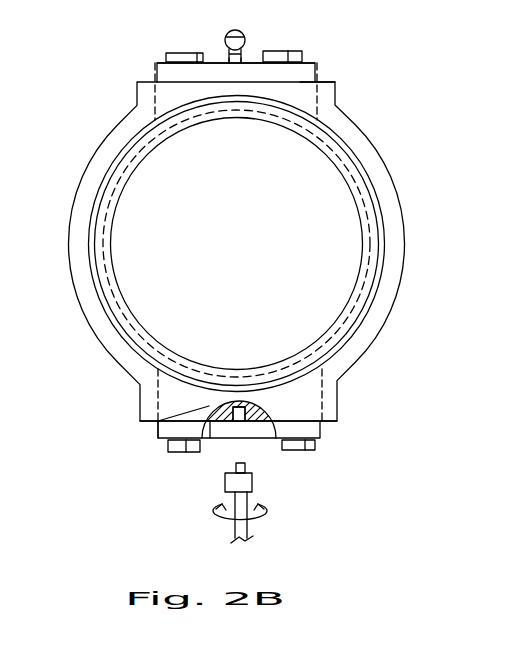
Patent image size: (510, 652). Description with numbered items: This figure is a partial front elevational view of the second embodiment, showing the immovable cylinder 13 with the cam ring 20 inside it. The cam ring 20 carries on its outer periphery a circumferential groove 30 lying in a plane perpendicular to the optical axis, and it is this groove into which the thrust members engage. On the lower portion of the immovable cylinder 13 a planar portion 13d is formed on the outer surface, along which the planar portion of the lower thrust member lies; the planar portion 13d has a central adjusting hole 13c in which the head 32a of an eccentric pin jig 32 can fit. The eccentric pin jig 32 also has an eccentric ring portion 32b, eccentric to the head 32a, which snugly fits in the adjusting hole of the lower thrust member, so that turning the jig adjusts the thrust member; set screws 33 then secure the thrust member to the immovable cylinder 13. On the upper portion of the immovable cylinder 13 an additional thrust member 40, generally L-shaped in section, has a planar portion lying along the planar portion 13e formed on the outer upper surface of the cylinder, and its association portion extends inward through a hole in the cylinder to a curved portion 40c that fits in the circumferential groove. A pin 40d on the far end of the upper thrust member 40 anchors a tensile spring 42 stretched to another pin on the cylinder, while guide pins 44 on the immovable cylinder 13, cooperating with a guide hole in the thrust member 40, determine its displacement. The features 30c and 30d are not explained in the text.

The immovable cylinder 13 is at (104, 146).
The central adjusting hole 13c is at (160, 421).
The planar portion 13d is at (155, 446).
The planar portion 13e is at (310, 78).
The cam ring 20 is at (345, 178).
The projection of lower holding plate 30c is at (233, 386).
The circumferential groove 30 is at (322, 430).
The recess of lower holding plate 30d is at (212, 430).
The eccentric pin jig 32 is at (213, 491).
The head 32a is at (246, 468).
The eccentric ring portion 32b is at (252, 484).
The set screws 33 is at (170, 448).
The thrust member 40 is at (155, 62).
The curved portion 40c is at (268, 106).
The pin 40d is at (245, 55).
The tensile spring 42 is at (243, 34).
The guide pins 44 is at (185, 53).